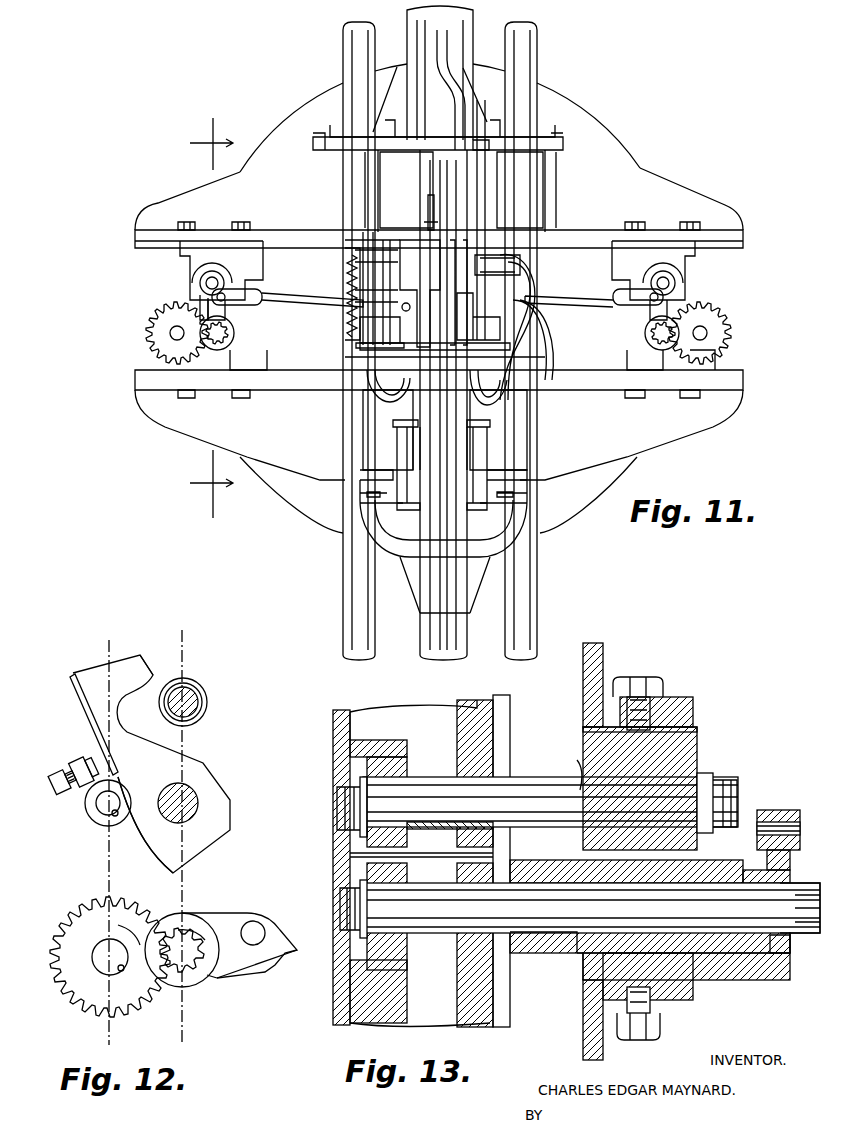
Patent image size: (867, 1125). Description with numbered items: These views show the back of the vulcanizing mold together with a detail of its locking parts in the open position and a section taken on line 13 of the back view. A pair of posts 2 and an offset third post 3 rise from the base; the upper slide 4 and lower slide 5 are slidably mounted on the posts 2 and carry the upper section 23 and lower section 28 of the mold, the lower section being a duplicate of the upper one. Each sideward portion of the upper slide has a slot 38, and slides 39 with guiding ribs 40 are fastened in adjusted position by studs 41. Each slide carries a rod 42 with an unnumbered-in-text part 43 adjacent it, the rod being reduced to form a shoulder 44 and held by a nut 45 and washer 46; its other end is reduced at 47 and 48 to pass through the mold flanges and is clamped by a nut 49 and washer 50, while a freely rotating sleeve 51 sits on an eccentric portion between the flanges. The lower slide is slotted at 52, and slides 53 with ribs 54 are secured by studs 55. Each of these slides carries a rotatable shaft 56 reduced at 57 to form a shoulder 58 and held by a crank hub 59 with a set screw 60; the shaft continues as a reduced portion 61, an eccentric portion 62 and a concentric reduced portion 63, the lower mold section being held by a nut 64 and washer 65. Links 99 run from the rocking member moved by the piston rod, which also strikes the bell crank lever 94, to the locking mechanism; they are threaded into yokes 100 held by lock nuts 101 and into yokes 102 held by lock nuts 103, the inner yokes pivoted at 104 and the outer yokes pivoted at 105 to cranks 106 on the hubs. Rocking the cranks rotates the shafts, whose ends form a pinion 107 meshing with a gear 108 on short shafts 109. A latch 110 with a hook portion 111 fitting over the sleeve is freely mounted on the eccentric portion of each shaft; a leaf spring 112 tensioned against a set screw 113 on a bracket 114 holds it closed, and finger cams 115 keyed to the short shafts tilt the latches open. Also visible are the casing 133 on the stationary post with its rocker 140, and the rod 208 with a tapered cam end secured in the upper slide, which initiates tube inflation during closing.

In FIG. 11, the posts 2 is at (343, 32).
In FIG. 11, the third post 3 is at (467, 640).
In FIG. 11, the upper slide 4 is at (140, 215).
In FIG. 13, the upper slide 4 is at (646, 676).
In FIG. 11, the lower slide 5 is at (160, 408).
In FIG. 13, the lower slide 5 is at (605, 1045).
In FIG. 11, the bolts 13 is at (192, 318).
In FIG. 11, the upper section 23 is at (550, 115).
In FIG. 13, the upper section 23 is at (383, 742).
In FIG. 13, the lower section 28 is at (390, 965).
In FIG. 13, the slot 38 is at (693, 712).
In FIG. 11, the slides 39 is at (180, 255).
In FIG. 13, the slides 39 is at (670, 745).
In FIG. 13, the ribs 40 is at (697, 735).
In FIG. 11, the studs 41 is at (695, 222).
In FIG. 13, the studs 41 is at (650, 680).
In FIG. 13, the rod 42 is at (528, 780).
In FIG. 13, the hub 43 is at (680, 835).
In FIG. 13, the shoulder 44 is at (580, 765).
In FIG. 13, the nut 45 is at (730, 803).
In FIG. 13, the washer 46 is at (708, 775).
In FIG. 13, the reduced portion 47 is at (480, 830).
In FIG. 11, the reduced portion 48 is at (206, 283).
In FIG. 12, the reduced portion 48 is at (192, 696).
In FIG. 13, the reduced portion 48 is at (360, 830).
In FIG. 11, the nut 49 is at (212, 276).
In FIG. 13, the nut 49 is at (345, 780).
In FIG. 13, the washer 50 is at (340, 805).
In FIG. 12, the sleeve 51 is at (207, 702).
In FIG. 13, the sleeve 51 is at (420, 820).
In FIG. 13, the slot 52 is at (690, 995).
In FIG. 11, the slides 53 is at (715, 355).
In FIG. 13, the slides 53 is at (686, 983).
In FIG. 13, the ribs 54 is at (610, 985).
In FIG. 13, the studs 55 is at (662, 1032).
In FIG. 11, the rotatable shaft 56 is at (217, 350).
In FIG. 12, the rotatable shaft 56 is at (188, 975).
In FIG. 13, the rotatable shaft 56 is at (545, 935).
In FIG. 13, the reduced portion 57 is at (575, 985).
In FIG. 13, the shoulder 58 is at (583, 960).
In FIG. 12, the crank hub 59 is at (215, 985).
In FIG. 13, the crank hub 59 is at (790, 950).
In FIG. 13, the set screw 60 is at (780, 960).
In FIG. 13, the reduced portion 61 is at (480, 910).
In FIG. 12, the eccentric portion 62 is at (190, 800).
In FIG. 13, the eccentric portion 62 is at (432, 920).
In FIG. 13, the concentric reduced portion 63 is at (395, 905).
In FIG. 13, the nut 64 is at (340, 905).
In FIG. 13, the washer 65 is at (345, 912).
In FIG. 11, the bell crank lever 94 is at (477, 450).
In FIG. 11, the links 99 is at (352, 310).
In FIG. 11, the yokes 100 is at (520, 265).
In FIG. 11, the lock nuts 101 is at (513, 288).
In FIG. 11, the yokes 102 is at (222, 300).
In FIG. 12, the yokes 102 is at (260, 975).
In FIG. 13, the yokes 102 is at (790, 812).
In FIG. 11, the lock nuts 103 is at (270, 296).
In FIG. 11, the pivot 104 is at (406, 305).
In FIG. 11, the pivot 105 is at (225, 290).
In FIG. 12, the pivot 105 is at (254, 922).
In FIG. 13, the pivot 105 is at (800, 828).
In FIG. 11, the cranks 106 is at (212, 297).
In FIG. 12, the cranks 106 is at (220, 915).
In FIG. 13, the cranks 106 is at (790, 858).
In FIG. 12, the pinion 107 is at (175, 975).
In FIG. 13, the pinion 107 is at (795, 935).
In FIG. 11, the gear 108 is at (150, 335).
In FIG. 12, the gear 108 is at (97, 905).
In FIG. 12, the shafts 109 is at (108, 815).
In FIG. 12, the latch 110 is at (92, 685).
In FIG. 12, the hook portion 111 is at (155, 672).
In FIG. 12, the leaf spring 112 is at (88, 732).
In FIG. 12, the set screw 113 is at (57, 792).
In FIG. 12, the bracket 114 is at (80, 760).
In FIG. 12, the finger cams 115 is at (140, 840).
In FIG. 11, the casing 133 is at (410, 245).
In FIG. 11, the rocker 140 is at (428, 195).
In FIG. 11, the rod 208 is at (482, 170).